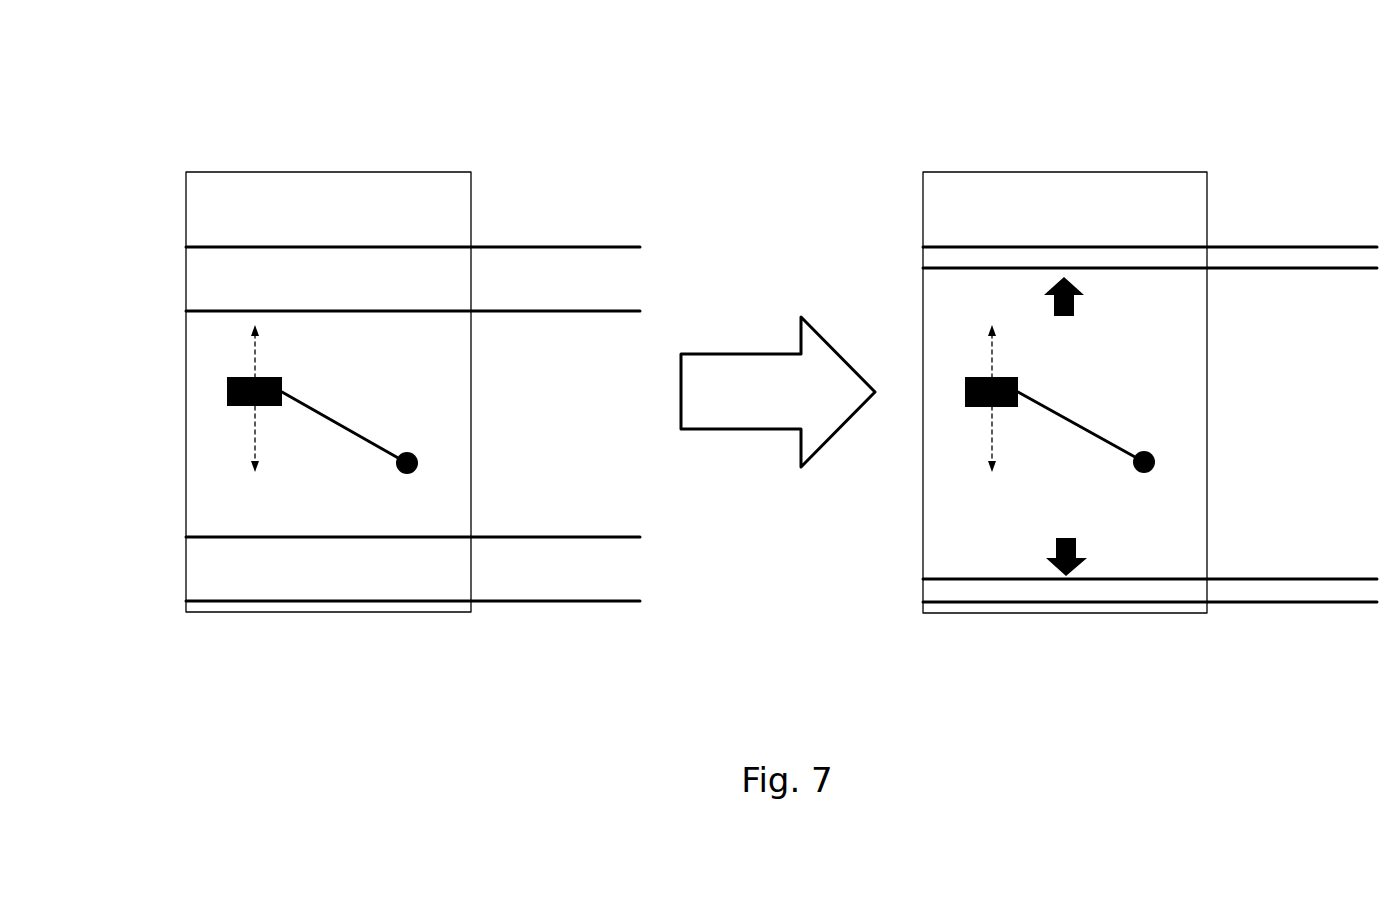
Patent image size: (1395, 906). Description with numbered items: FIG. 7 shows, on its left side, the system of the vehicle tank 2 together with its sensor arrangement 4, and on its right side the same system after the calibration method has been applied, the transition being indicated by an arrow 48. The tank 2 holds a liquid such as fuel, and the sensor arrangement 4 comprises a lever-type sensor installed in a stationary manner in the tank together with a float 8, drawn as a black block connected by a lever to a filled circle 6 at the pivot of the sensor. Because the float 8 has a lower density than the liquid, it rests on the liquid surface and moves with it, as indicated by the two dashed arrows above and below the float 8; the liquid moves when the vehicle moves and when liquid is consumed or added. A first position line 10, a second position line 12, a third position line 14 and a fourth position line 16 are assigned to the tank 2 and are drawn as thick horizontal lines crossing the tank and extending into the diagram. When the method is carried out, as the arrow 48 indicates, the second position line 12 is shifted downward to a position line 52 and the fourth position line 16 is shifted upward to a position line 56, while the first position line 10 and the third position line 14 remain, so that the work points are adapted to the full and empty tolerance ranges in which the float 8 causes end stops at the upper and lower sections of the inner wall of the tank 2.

The tank 2 is at (327, 152).
The sensor arrangement 4 is at (210, 445).
The mass 6 is at (406, 451).
The float 8 is at (283, 380).
The first position line 10 is at (559, 604).
The second position line 12 is at (562, 535).
The third position line 14 is at (572, 244).
The fourth position line 16 is at (577, 313).
The arrow 48 is at (746, 366).
The position line 52 is at (1303, 577).
The position line 56 is at (1316, 270).